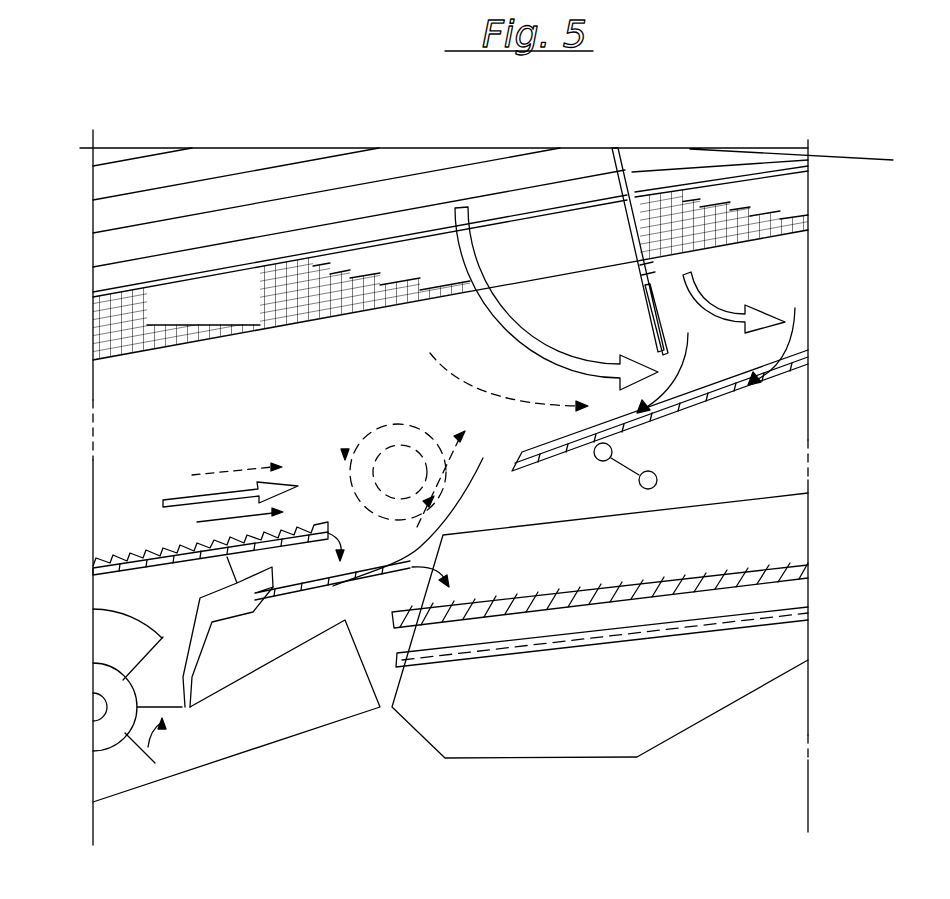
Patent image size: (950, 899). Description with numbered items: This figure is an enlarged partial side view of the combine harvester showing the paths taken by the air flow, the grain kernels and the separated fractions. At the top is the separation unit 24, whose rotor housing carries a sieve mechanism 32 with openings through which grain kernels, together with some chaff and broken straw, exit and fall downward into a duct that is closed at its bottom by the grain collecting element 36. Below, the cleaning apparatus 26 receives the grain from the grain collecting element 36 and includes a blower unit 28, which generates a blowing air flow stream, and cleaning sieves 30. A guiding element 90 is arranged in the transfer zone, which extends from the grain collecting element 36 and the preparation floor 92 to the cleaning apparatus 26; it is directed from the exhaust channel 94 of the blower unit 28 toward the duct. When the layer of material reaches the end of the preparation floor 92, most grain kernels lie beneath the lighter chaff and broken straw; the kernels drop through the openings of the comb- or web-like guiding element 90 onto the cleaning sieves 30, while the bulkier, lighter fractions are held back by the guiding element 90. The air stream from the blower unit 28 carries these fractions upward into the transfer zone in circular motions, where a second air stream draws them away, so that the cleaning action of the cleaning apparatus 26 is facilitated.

The separation unit 24 is at (273, 178).
The cleaning apparatus 26 is at (403, 730).
The blower unit 28 is at (113, 728).
The cleaning sieves 30 is at (723, 580).
The sieve mechanism 32 is at (323, 302).
The grain collecting element 36 is at (700, 393).
The guiding element 90 is at (455, 503).
The preparation floor 92 is at (138, 557).
The exhaust channel 94 is at (237, 590).